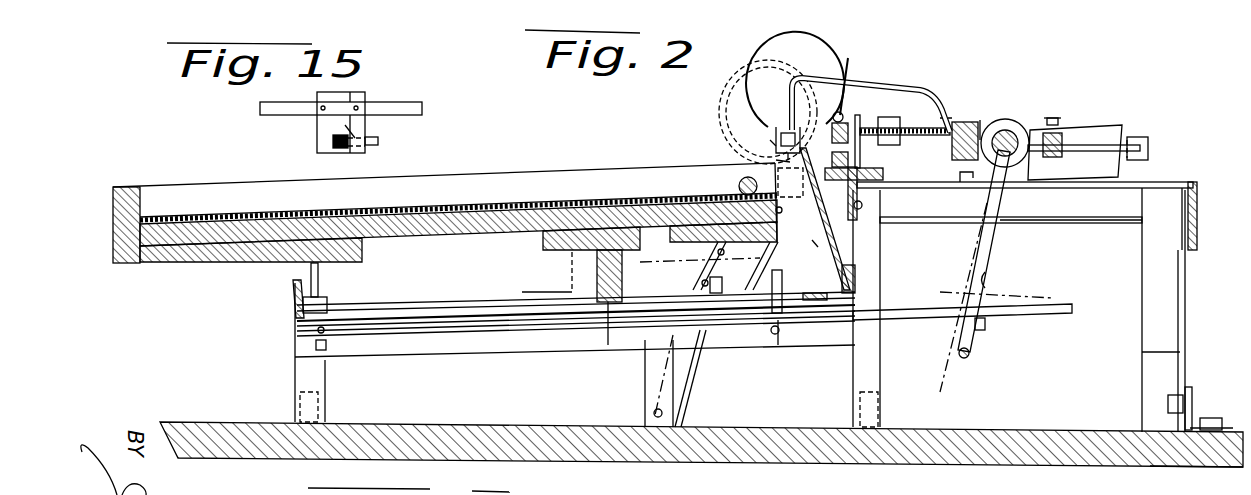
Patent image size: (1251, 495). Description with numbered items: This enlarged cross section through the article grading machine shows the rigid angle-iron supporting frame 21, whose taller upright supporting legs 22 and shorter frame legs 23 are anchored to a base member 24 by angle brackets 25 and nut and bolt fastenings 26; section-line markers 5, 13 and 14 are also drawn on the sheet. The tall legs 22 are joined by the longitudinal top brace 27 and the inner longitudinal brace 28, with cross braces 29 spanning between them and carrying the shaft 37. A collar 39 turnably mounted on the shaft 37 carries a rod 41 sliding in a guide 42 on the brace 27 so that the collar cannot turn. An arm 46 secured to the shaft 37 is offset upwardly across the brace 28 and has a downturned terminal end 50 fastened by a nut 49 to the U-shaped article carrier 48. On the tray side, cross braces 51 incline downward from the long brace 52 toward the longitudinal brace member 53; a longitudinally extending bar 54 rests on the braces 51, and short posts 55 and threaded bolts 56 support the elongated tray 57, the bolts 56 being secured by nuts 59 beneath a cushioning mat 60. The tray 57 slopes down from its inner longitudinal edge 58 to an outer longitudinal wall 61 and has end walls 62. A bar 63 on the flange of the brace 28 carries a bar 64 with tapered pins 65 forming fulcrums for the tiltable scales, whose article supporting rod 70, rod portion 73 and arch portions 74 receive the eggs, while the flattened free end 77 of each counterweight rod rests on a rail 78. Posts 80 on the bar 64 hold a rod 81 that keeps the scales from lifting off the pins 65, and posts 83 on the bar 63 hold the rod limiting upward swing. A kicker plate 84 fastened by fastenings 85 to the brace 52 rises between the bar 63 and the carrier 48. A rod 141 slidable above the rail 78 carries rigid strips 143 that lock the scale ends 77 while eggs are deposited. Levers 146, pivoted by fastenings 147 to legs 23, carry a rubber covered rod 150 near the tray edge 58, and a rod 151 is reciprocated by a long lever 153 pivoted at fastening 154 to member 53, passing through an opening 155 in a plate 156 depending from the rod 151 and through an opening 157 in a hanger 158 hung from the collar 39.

In FIG. 2, the section line 5 is at (540, 265).
In FIG. 2, the lever arm 13 is at (975, 250).
In FIG. 2, the bar 14 is at (933, 260).
In FIG. 2, the supporting frame 21 is at (1135, 375).
In FIG. 2, the upright supporting legs 22 is at (855, 370).
In FIG. 2, the shorter frame legs 23 is at (328, 383).
In FIG. 2, the base member 24 is at (992, 431).
In FIG. 2, the angle brackets 25 is at (1192, 433).
In FIG. 2, the nut and bolt fastenings 26 is at (1197, 408).
In FIG. 2, the longitudinal top brace 27 is at (1197, 188).
In FIG. 2, the inner longitudinal brace 28 is at (862, 207).
In FIG. 2, the cross braces 29 is at (1078, 211).
In FIG. 2, the shaft 37 is at (1005, 122).
In FIG. 2, the collar 39 is at (1020, 125).
In FIG. 2, the rod 41 is at (1090, 146).
In FIG. 2, the guide 42 is at (1147, 138).
In FIG. 2, the arm 46 is at (858, 90).
In FIG. 2, the article carrier 48 is at (773, 143).
In FIG. 2, the nut 49 is at (783, 163).
In FIG. 2, the downturned terminal end 50 is at (785, 127).
In FIG. 2, the cross braces 51 is at (510, 345).
In FIG. 2, the long brace 52 is at (858, 298).
In FIG. 2, the longitudinal brace member 53 is at (295, 310).
In FIG. 2, the longitudinally extending bar 54 is at (608, 345).
In FIG. 2, the short posts 55 is at (322, 278).
In FIG. 2, the threaded bolts 56 is at (632, 264).
In FIG. 2, the elongated tray 57 is at (478, 224).
In FIG. 2, the inner longitudinal edge 58 is at (780, 213).
In FIG. 2, the nuts 59 is at (648, 203).
In FIG. 2, the cushioning mat 60 is at (515, 202).
In FIG. 2, the outer longitudinal wall 61 is at (113, 218).
In FIG. 2, the end walls 62 is at (447, 175).
In FIG. 2, the bar 63 is at (878, 170).
In FIG. 2, the bar 64 is at (803, 188).
In FIG. 2, the pins 65 is at (840, 193).
In FIG. 2, the rod 70 is at (828, 147).
In FIG. 2, the rod portion 73 is at (770, 135).
In FIG. 2, the arch portions 74 is at (741, 62).
In FIG. 2, the flattened free end 77 is at (905, 126).
In FIG. 2, the rail 78 is at (947, 173).
In FIG. 2, the posts 80 is at (845, 108).
In FIG. 2, the rod 81 is at (853, 77).
In FIG. 2, the posts 83 is at (861, 158).
In FIG. 2, the kicker plate 84 is at (858, 254).
In FIG. 2, the fastenings 85 is at (848, 295).
In FIG. 2, the rod 141 is at (987, 130).
In FIG. 2, the rigid strips 143 is at (955, 122).
In FIG. 2, the levers 146 is at (690, 382).
In FIG. 2, the fastenings 147 is at (659, 418).
In FIG. 2, the rubber covered rod 150 is at (739, 186).
In FIG. 15, the rod 151 is at (422, 108).
In FIG. 2, the rod 151 is at (786, 292).
In FIG. 15, the long lever 153 is at (333, 140).
In FIG. 2, the long lever 153 is at (443, 330).
In FIG. 2, the fastening 154 is at (322, 347).
In FIG. 15, the opening 155 is at (350, 146).
In FIG. 2, the opening 155 is at (778, 334).
In FIG. 15, the plate 156 is at (350, 132).
In FIG. 2, the plate 156 is at (778, 345).
In FIG. 2, the opening 157 is at (983, 328).
In FIG. 2, the hanger 158 is at (987, 280).